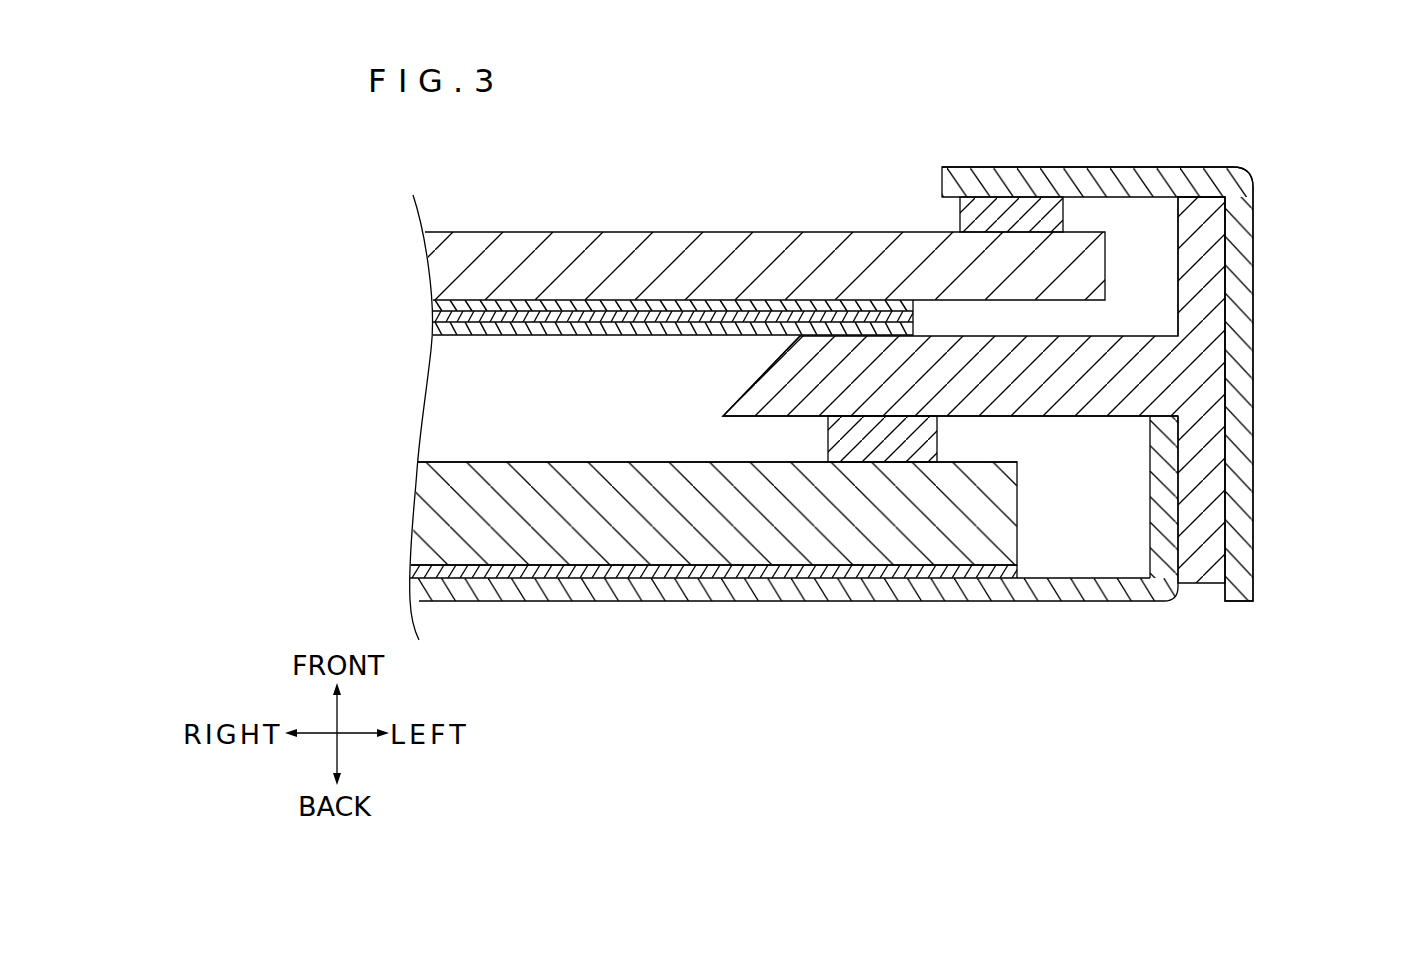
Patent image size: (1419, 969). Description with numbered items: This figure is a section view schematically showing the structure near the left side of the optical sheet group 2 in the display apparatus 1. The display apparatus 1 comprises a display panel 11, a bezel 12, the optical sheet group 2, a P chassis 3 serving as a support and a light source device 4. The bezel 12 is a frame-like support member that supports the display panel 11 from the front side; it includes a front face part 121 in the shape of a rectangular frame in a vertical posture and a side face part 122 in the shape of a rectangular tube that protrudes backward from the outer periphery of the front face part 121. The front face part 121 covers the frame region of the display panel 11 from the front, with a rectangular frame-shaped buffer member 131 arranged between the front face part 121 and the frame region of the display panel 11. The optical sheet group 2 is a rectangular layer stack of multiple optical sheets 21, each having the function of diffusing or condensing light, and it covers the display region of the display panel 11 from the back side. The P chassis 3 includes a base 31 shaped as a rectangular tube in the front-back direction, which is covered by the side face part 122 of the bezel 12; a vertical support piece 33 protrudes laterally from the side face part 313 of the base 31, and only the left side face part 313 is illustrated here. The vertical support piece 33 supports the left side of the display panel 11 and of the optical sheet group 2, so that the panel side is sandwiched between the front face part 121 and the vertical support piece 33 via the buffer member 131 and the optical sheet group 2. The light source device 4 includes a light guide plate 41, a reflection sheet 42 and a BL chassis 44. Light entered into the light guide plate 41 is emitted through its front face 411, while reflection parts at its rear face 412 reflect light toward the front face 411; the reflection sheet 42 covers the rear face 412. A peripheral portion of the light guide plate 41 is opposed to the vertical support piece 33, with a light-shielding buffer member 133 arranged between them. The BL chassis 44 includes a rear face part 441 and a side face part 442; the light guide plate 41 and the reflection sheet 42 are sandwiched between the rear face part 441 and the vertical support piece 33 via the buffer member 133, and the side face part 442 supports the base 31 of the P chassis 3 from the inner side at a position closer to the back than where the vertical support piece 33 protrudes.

The display apparatus 1 is at (1380, 63).
The display panel 11 is at (763, 232).
The bezel 12 is at (1181, 165).
The front face part 121 is at (1120, 178).
The side face part 122 is at (1248, 260).
The buffer member 131 is at (1058, 218).
The buffer member 133 is at (835, 436).
The optical sheet group 2 is at (703, 176).
The optical sheet 21 is at (518, 307).
The P chassis 3 is at (1353, 265).
The base 31 is at (1266, 272).
The side face part 313 is at (1200, 283).
The vertical support piece 33 is at (1105, 372).
The light source device 4 is at (770, 612).
The light guide plate 41 is at (510, 495).
The front face 411 is at (607, 462).
The rear face 412 is at (690, 575).
The reflection sheet 42 is at (592, 575).
The BL chassis 44 is at (1098, 606).
The rear face part 441 is at (992, 598).
The side face part 442 is at (1173, 563).